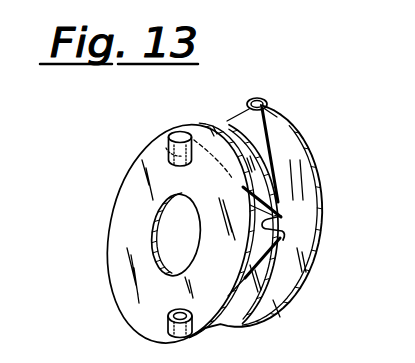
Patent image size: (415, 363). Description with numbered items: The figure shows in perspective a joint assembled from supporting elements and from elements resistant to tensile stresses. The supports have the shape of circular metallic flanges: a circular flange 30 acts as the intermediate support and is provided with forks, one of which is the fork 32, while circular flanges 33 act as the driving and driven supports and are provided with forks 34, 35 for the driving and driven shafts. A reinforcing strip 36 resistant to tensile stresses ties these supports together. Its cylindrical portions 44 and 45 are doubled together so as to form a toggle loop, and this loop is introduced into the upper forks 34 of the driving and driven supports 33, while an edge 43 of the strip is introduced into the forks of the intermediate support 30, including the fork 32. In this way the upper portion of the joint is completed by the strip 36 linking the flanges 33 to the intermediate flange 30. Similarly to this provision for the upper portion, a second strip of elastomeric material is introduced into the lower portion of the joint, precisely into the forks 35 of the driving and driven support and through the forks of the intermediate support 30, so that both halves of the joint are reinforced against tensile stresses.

The circular flange 30 is at (223, 127).
The fork 32 is at (258, 203).
The circular flange 33 is at (127, 230).
The upper fork 34 is at (168, 139).
The fork 35 is at (178, 339).
The reinforcing strip 36 is at (284, 176).
The edge 43 is at (283, 238).
The cylindrical portion 44 is at (166, 148).
The cylindrical portion 45 is at (268, 104).